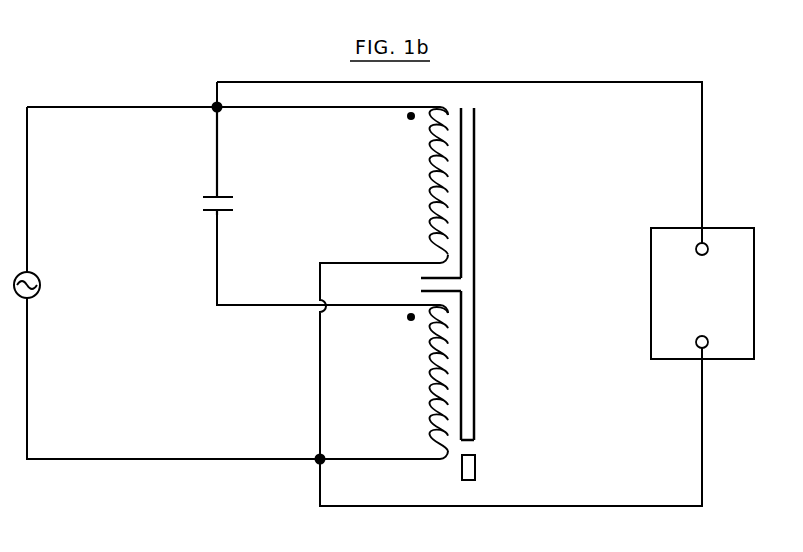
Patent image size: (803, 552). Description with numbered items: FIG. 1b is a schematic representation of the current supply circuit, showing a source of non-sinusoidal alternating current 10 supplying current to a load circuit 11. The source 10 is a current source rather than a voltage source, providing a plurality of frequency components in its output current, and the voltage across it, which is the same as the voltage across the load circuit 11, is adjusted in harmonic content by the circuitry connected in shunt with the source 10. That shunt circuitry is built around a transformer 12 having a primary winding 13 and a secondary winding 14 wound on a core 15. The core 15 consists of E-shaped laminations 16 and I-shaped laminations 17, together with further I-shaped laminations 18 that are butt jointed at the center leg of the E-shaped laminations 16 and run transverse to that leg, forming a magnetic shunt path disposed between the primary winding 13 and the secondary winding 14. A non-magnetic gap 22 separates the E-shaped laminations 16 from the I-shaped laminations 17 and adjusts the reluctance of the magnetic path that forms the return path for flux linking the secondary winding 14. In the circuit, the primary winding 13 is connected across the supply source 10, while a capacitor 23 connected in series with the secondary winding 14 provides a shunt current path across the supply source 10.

The source of non-sinusoidal alternating current 10 is at (40, 285).
The load circuit 11 is at (755, 313).
The transformer 12 is at (495, 282).
The primary winding 13 is at (432, 187).
The secondary winding 14 is at (432, 381).
The core 15 is at (517, 274).
The E-shaped laminations 16 is at (474, 130).
The I-shaped laminations 17 is at (476, 475).
The I-shaped laminations 18 is at (511, 266).
The non-magnetic gap 22 is at (477, 442).
The capacitor 23 is at (236, 205).